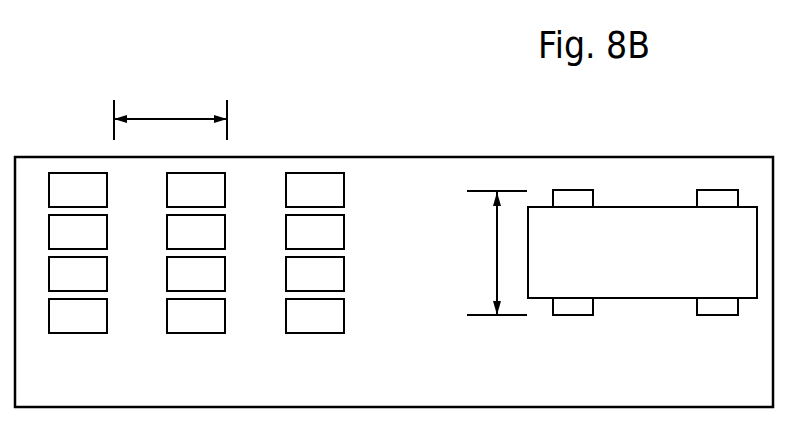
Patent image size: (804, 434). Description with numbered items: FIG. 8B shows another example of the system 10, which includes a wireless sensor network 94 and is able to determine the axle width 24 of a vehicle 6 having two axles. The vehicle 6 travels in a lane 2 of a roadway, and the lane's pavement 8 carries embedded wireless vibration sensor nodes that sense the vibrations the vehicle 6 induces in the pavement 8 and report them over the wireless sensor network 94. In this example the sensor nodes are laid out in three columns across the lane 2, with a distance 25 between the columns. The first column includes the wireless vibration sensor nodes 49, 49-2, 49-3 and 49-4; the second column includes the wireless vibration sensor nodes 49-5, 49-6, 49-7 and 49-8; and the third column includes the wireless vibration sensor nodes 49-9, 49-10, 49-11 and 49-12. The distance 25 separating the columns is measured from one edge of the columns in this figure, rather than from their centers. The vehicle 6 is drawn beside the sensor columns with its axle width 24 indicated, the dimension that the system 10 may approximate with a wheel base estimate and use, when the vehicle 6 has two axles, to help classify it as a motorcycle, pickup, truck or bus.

The lane 2 is at (77, 396).
The pavement 8 is at (188, 396).
The distance 25 is at (168, 118).
The system 10 is at (651, 116).
The wireless sensor network 94 is at (731, 136).
The embedded wireless vibration sensor node 49 is at (78, 190).
The embedded wireless vibration sensor node 49-2 is at (78, 232).
The embedded wireless vibration sensor node 49-3 is at (78, 274).
The embedded wireless vibration sensor node 49-4 is at (78, 316).
The embedded wireless vibration sensor node 49-5 is at (196, 190).
The embedded wireless vibration sensor node 49-6 is at (196, 232).
The embedded wireless vibration sensor node 49-7 is at (196, 274).
The embedded wireless vibration sensor node 49-8 is at (196, 316).
The embedded wireless vibration sensor node 49-9 is at (315, 190).
The embedded wireless vibration sensor node 49-10 is at (315, 232).
The embedded wireless vibration sensor node 49-11 is at (315, 274).
The embedded wireless vibration sensor node 49-12 is at (315, 316).
The axle width 24 is at (496, 255).
The vehicle 6 is at (642, 252).